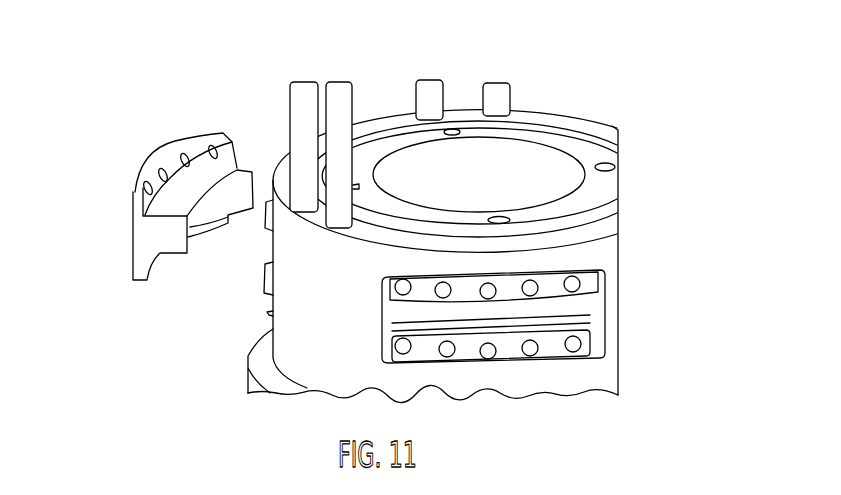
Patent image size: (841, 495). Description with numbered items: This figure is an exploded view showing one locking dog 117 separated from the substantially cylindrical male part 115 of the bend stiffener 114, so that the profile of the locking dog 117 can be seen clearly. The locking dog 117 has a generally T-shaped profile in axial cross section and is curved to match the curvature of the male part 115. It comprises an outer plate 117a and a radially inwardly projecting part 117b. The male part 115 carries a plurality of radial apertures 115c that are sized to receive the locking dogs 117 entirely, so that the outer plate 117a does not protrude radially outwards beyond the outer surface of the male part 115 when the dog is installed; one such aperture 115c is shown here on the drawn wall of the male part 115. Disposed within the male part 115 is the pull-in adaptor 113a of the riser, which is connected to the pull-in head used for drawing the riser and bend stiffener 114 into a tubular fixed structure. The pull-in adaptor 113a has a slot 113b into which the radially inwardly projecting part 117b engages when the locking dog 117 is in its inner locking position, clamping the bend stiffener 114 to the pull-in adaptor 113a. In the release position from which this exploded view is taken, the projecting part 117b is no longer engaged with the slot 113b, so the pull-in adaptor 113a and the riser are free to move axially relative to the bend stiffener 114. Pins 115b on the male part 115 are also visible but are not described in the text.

The pull-in adaptor 113a is at (525, 137).
The slot 113b is at (553, 307).
The bend stiffener 114 is at (273, 313).
The male part 115 is at (262, 362).
The locating pins 115b is at (354, 108).
The radial apertures 115c is at (408, 309).
The locking dog 117 is at (164, 183).
The outer plate 117a is at (150, 162).
The radially inwardly projecting part 117b is at (228, 170).